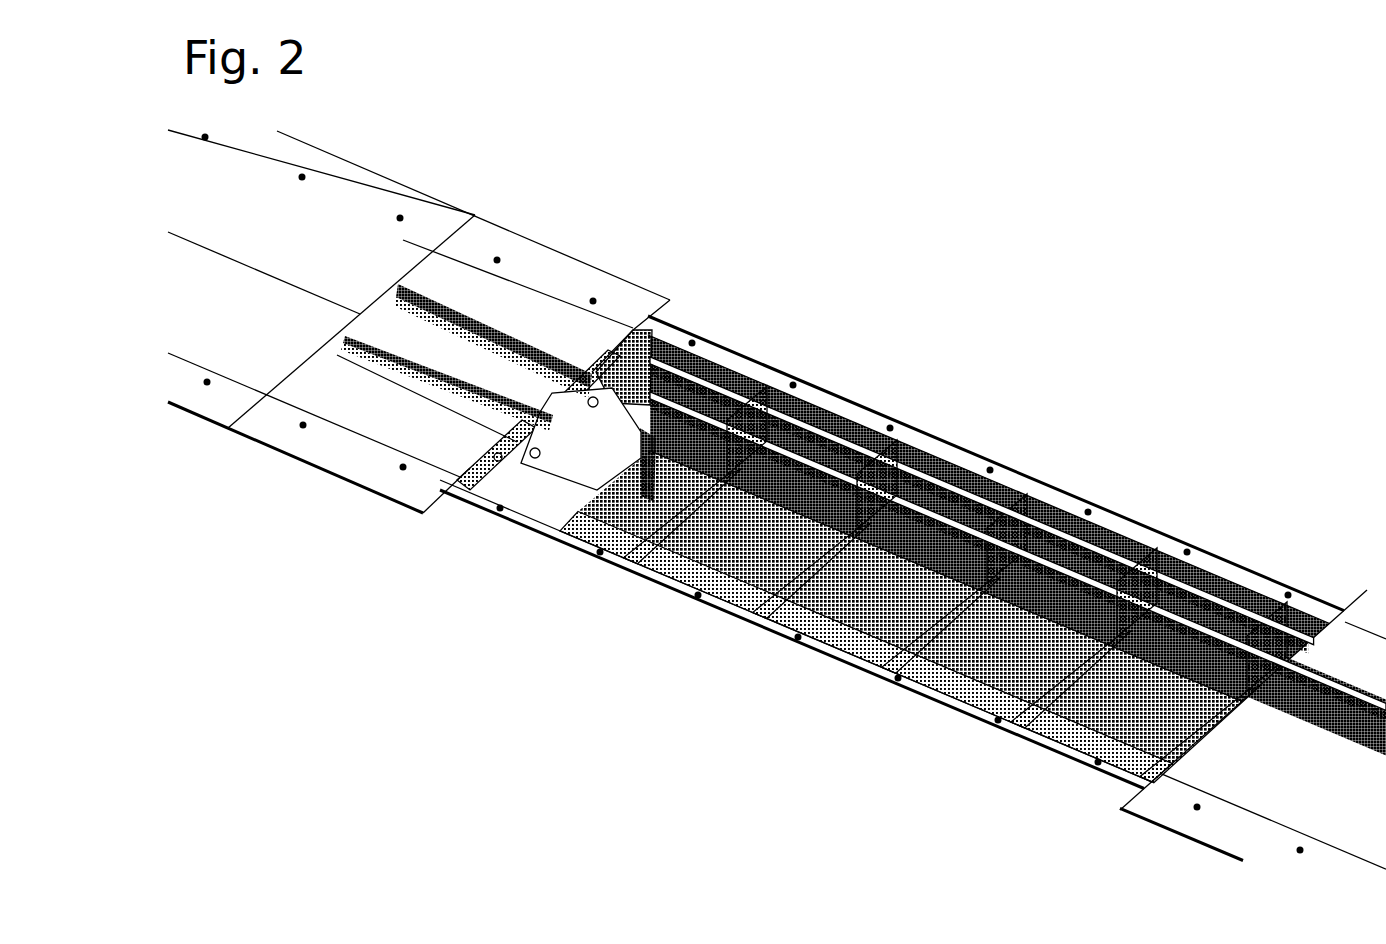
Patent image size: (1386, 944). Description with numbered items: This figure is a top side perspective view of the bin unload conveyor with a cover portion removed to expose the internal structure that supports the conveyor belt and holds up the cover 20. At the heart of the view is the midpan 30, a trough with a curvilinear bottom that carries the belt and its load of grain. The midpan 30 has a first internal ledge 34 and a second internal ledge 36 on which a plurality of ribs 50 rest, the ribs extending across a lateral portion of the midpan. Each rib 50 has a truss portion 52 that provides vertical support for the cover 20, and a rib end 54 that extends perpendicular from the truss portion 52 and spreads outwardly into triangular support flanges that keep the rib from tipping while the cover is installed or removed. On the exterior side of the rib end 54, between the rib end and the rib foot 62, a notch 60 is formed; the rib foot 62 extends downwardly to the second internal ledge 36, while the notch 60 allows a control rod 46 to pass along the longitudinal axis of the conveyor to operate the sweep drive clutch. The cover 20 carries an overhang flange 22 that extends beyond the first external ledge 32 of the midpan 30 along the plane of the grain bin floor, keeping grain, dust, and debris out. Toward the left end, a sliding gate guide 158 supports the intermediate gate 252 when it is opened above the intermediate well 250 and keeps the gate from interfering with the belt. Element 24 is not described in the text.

The cover 20 is at (253, 336).
The overhang flange 22 is at (383, 178).
The skin panel 24 is at (263, 276).
The midpan 30 is at (862, 402).
The first external ledge 32 is at (820, 386).
The first internal ledge 34 is at (806, 424).
The second internal ledge 36 is at (762, 454).
The control rod 46 is at (1182, 628).
The ribs 50 is at (806, 520).
The truss portion 52 is at (812, 540).
The rib end 54 is at (882, 450).
The notch 60 is at (900, 500).
The rib foot 62 is at (864, 514).
The sliding gate guide 158 is at (616, 470).
The intermediate well 250 is at (580, 231).
The intermediate gate 252 is at (448, 365).